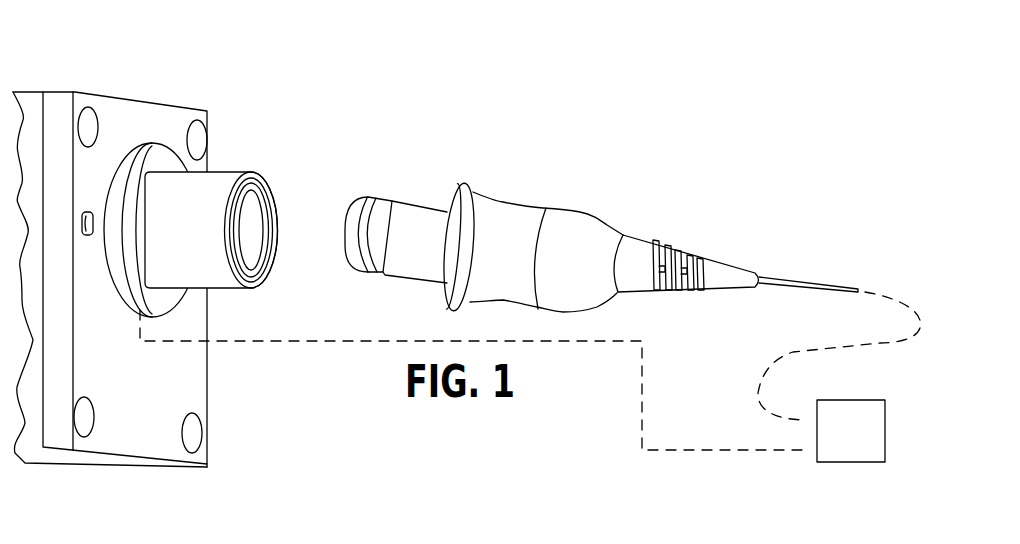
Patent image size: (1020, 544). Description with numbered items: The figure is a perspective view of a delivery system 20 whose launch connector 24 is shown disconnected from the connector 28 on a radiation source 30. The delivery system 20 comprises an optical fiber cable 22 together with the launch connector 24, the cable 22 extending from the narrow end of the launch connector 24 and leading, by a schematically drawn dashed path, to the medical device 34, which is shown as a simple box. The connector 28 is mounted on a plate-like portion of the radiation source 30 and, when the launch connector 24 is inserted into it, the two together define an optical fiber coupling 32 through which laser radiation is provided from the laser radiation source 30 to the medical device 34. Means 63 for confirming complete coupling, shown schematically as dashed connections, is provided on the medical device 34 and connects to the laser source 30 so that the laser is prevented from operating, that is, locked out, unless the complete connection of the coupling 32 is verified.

The delivery system 20 is at (673, 108).
The optical fiber cable 22 is at (800, 280).
The launch connector 24 is at (507, 203).
The connector 28 is at (228, 171).
The radiation source 30 is at (130, 100).
The optical fiber coupling 32 is at (473, 185).
The medical device 34 is at (851, 431).
The means for confirming complete coupling 63 is at (692, 452).